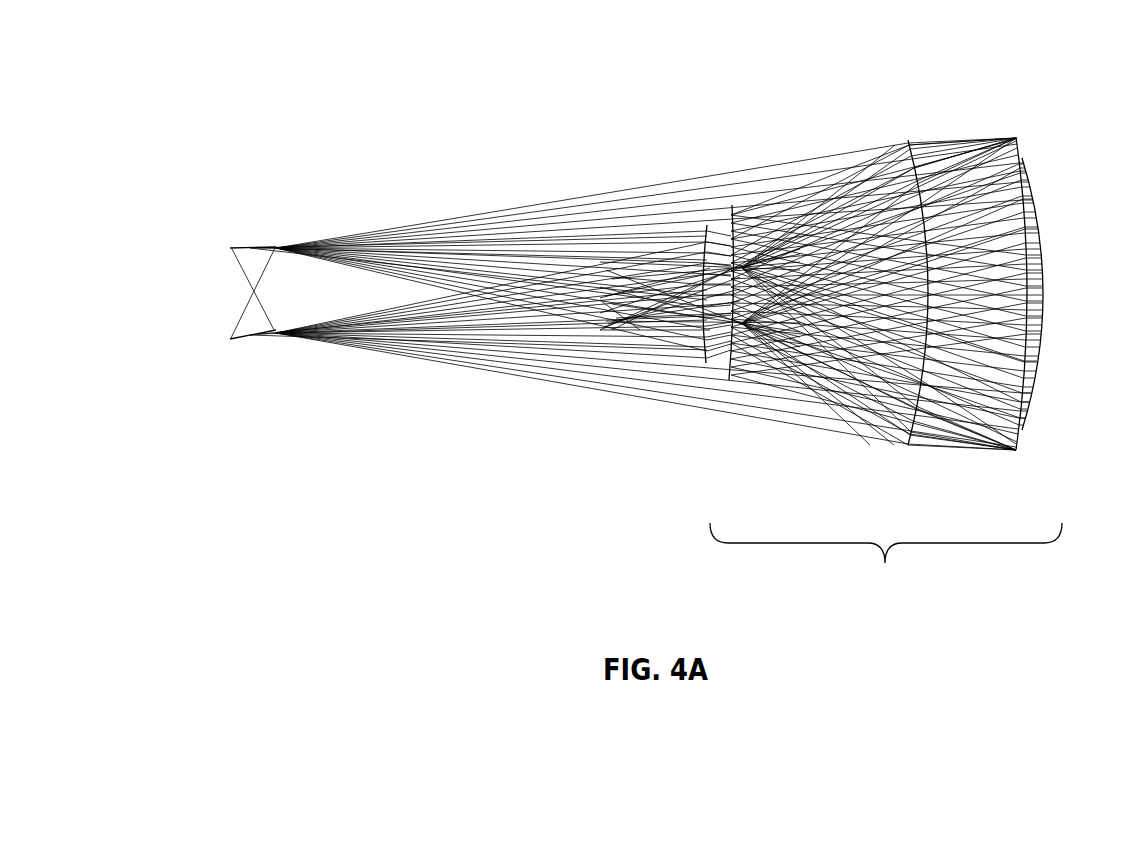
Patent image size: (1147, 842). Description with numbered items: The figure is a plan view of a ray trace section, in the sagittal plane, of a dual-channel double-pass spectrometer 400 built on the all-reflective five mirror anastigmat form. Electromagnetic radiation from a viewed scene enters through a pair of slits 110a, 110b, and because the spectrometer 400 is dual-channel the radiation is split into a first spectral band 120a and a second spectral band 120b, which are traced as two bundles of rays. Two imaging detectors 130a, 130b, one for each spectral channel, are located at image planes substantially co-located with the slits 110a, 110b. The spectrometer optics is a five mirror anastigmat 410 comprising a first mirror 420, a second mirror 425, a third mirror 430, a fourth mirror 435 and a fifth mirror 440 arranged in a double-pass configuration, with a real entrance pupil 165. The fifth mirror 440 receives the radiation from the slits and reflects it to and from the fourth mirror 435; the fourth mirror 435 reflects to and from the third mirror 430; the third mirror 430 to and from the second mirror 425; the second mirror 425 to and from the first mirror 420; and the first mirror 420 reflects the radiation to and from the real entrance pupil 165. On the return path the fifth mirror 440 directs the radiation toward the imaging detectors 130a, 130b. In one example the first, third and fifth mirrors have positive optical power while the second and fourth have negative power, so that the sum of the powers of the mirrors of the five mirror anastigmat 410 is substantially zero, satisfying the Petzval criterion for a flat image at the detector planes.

The dual-channel double-pass spectrometer 400 is at (310, 123).
The slit 110a is at (237, 323).
The slit 110b is at (242, 270).
The imaging detector 130a is at (216, 316).
The imaging detector 130b is at (229, 288).
The first spectral band 120a is at (460, 213).
The second spectral band 120b is at (475, 387).
The real entrance pupil 165 is at (600, 298).
The fourth mirror 435 is at (708, 220).
The second mirror 425 is at (735, 187).
The fifth mirror 440 is at (923, 125).
The third mirror 430 is at (1038, 210).
The first mirror 420 is at (1048, 335).
The five mirror anastigmat (5MA) 410 is at (886, 566).